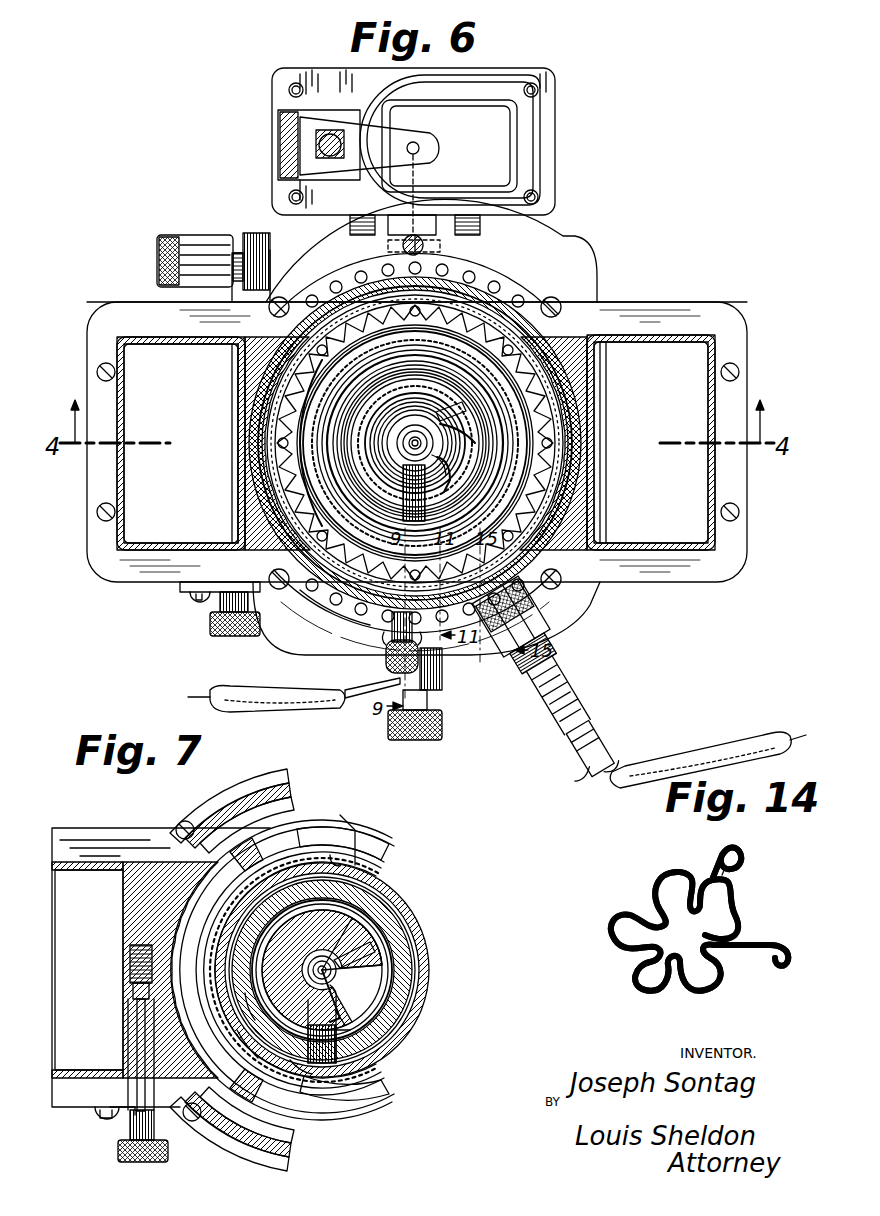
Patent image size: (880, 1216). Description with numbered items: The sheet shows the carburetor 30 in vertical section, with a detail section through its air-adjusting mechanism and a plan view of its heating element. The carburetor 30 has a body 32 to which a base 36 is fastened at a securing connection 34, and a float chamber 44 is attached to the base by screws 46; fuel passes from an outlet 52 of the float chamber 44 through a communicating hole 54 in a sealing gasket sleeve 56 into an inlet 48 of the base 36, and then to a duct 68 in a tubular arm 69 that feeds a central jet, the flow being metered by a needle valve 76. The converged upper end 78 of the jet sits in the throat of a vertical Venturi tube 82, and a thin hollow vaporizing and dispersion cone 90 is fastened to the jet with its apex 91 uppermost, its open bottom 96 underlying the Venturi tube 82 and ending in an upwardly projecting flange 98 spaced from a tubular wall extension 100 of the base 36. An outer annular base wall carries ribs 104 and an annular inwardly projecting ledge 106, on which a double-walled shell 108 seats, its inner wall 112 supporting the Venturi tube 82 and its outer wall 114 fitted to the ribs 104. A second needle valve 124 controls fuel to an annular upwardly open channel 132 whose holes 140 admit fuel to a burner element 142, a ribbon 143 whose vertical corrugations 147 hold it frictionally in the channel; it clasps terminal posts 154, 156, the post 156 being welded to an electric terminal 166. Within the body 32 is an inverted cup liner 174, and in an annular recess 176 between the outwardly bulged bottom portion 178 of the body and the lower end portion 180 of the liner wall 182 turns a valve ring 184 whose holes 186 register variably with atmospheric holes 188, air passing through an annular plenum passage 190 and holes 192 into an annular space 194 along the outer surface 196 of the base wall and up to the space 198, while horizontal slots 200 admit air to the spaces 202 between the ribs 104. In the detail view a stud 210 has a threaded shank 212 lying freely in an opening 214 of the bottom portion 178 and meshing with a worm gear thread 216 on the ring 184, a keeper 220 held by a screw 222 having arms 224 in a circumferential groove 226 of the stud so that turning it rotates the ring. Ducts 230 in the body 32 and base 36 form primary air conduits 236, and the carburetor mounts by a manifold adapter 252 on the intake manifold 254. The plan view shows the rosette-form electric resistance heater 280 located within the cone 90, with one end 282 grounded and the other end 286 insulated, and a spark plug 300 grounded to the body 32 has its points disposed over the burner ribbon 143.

In FIG. 6, the carburetor 30 is at (676, 268).
In FIG. 6, the body 32 is at (352, 285).
In FIG. 6, the securing connection 34 is at (100, 376).
In FIG. 7, the securing connection 34 is at (185, 820).
In FIG. 6, the base 36 is at (588, 246).
In FIG. 6, the float chamber 44 is at (570, 128).
In FIG. 6, the screws 46 is at (350, 223).
In FIG. 6, the inlet 48 is at (448, 285).
In FIG. 6, the outlet 52 is at (430, 170).
In FIG. 6, the communicating hole 54 is at (415, 240).
In FIG. 6, the sealing gasket sleeve 56 is at (430, 228).
In FIG. 7, the duct 68 is at (370, 1028).
In FIG. 6, the tubular arm 69 is at (404, 470).
In FIG. 7, the tubular arm 69 is at (340, 1045).
In FIG. 6, the needle valve 76 is at (405, 740).
In FIG. 6, the converged upper end 78 is at (428, 440).
In FIG. 7, the converged upper end 78 is at (338, 970).
In FIG. 7, the Venturi tube 82 is at (370, 935).
In FIG. 6, the vaporizing and dispersion cone 90 is at (520, 500).
In FIG. 7, the vaporizing and dispersion cone 90 is at (388, 993).
In FIG. 7, the apex 91 is at (345, 990).
In FIG. 6, the bottom 96 is at (454, 463).
In FIG. 7, the upwardly projecting flange 98 is at (355, 1015).
In FIG. 6, the tubular wall extension 100 is at (503, 430).
In FIG. 7, the tubular wall extension 100 is at (400, 945).
In FIG. 7, the ribs 104 is at (330, 866).
In FIG. 7, the annular inwardly projecting ledge 106 is at (340, 855).
In FIG. 7, the double-walled shell 108 is at (362, 878).
In FIG. 6, the inner wall 112 is at (458, 474).
In FIG. 7, the inner wall 112 is at (372, 945).
In FIG. 6, the outer wall 114 is at (300, 428).
In FIG. 7, the outer wall 114 is at (300, 1072).
In FIG. 6, the needle valve 124 is at (157, 255).
In FIG. 6, the annular upwardly open channel 132 is at (300, 510).
In FIG. 6, the holes 140 is at (312, 442).
In FIG. 6, the burner element 142 is at (495, 420).
In FIG. 6, the ribbon 143 is at (505, 480).
In FIG. 6, the vertical corrugations 147 is at (490, 408).
In FIG. 6, the terminal post 154 is at (442, 655).
In FIG. 6, the terminal post 156 is at (415, 620).
In FIG. 6, the electric terminal 166 is at (386, 662).
In FIG. 6, the inverted cup liner 174 is at (278, 486).
In FIG. 7, the annular recess 176 is at (125, 902).
In FIG. 6, the outwardly bulged bottom portion 178 is at (306, 300).
In FIG. 7, the outwardly bulged bottom portion 178 is at (288, 775).
In FIG. 7, the lower end portion 180 is at (365, 920).
In FIG. 6, the liner wall 182 is at (262, 472).
In FIG. 7, the liner wall 182 is at (236, 1037).
In FIG. 7, the valve ring 184 is at (150, 1045).
In FIG. 7, the holes 186 is at (238, 815).
In FIG. 6, the holes 188 is at (545, 310).
In FIG. 7, the holes 188 is at (215, 830).
In FIG. 7, the annular plenum passage 190 is at (288, 808).
In FIG. 7, the holes 192 is at (290, 822).
In FIG. 6, the annular space 194 is at (500, 462).
In FIG. 7, the annular space 194 is at (212, 950).
In FIG. 7, the outer surface 196 is at (356, 812).
In FIG. 6, the space 198 is at (632, 470).
In FIG. 7, the horizontal slots 200 is at (355, 830).
In FIG. 6, the spaces 202 is at (320, 420).
In FIG. 7, the spaces 202 is at (278, 876).
In FIG. 6, the stud 210 is at (215, 636).
In FIG. 7, the stud 210 is at (128, 1158).
In FIG. 7, the threaded shank 212 is at (135, 1025).
In FIG. 7, the opening 214 is at (130, 995).
In FIG. 7, the worm gear thread 216 is at (128, 970).
In FIG. 6, the keeper 220 is at (190, 588).
In FIG. 7, the keeper 220 is at (96, 1108).
In FIG. 6, the screw 222 is at (196, 598).
In FIG. 7, the screw 222 is at (100, 1118).
In FIG. 6, the arms 224 is at (220, 602).
In FIG. 7, the arms 224 is at (130, 1128).
In FIG. 7, the circumferential groove 226 is at (125, 1116).
In FIG. 6, the ducts 230 is at (416, 442).
In FIG. 6, the primary air conduits 236 is at (112, 478).
In FIG. 7, the primary air conduits 236 is at (75, 860).
In FIG. 6, the manifold adapter 252 is at (525, 512).
In FIG. 7, the manifold adapter 252 is at (238, 986).
In FIG. 6, the intake manifold 254 is at (572, 520).
In FIG. 7, the intake manifold 254 is at (378, 950).
In FIG. 14, the electric resistance heater 280 is at (645, 866).
In FIG. 14, the end 282 is at (775, 966).
In FIG. 14, the other end 286 is at (738, 866).
In FIG. 6, the spark plug 300 is at (590, 708).